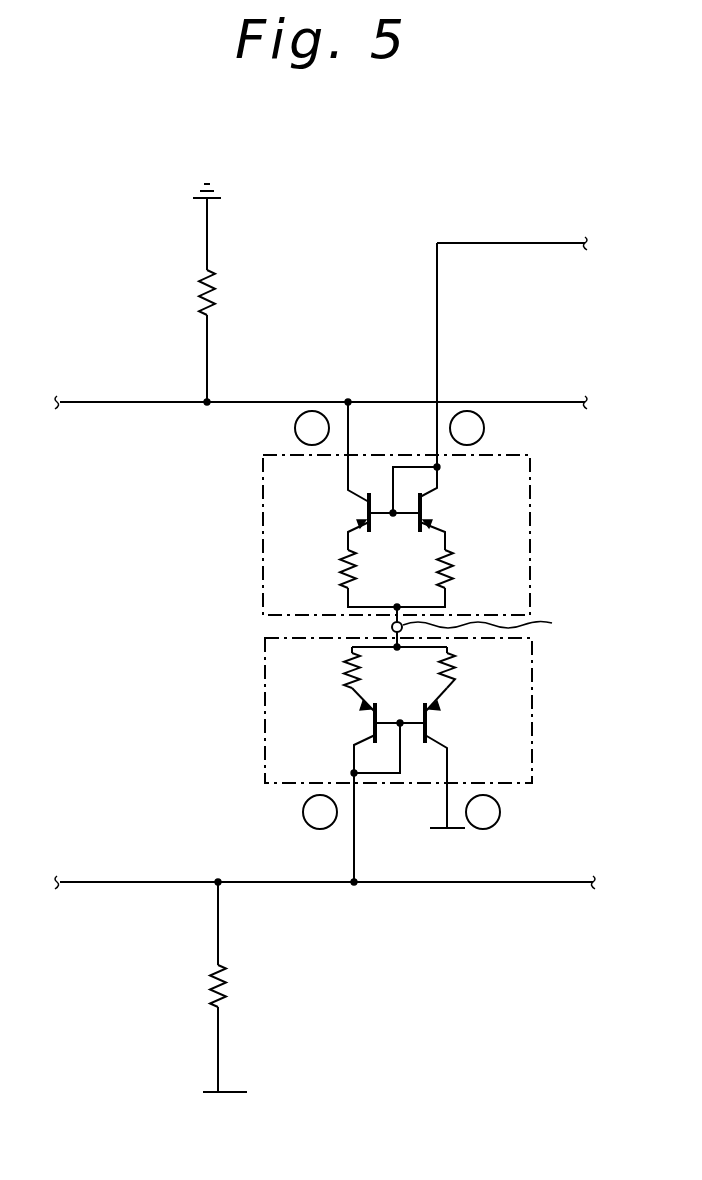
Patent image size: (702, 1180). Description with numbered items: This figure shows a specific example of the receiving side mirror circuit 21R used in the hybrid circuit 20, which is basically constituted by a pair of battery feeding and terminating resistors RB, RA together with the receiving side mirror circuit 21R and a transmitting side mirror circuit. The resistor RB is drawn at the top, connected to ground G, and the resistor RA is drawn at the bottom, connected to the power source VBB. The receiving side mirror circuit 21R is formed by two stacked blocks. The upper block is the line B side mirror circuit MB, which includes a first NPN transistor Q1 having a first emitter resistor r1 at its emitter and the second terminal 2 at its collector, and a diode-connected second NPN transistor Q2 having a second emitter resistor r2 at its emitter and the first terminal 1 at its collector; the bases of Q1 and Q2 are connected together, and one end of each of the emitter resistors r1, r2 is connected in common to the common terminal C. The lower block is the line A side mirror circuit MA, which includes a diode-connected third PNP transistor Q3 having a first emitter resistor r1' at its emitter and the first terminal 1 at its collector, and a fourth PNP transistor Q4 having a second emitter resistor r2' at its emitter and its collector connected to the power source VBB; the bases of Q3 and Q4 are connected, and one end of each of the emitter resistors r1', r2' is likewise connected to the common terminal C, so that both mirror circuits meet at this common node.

The hybrid circuit 20 is at (339, 305).
The receiving side mirror circuit 21R is at (247, 627).
The first terminal 1 is at (393, 620).
The second terminal 2 is at (397, 620).
The line B side mirror circuit MB is at (262, 484).
The line A side mirror circuit MA is at (262, 742).
The first NPN transistor Q1 is at (363, 513).
The second NPN transistor Q2 is at (436, 505).
The third PNP transistor Q3 is at (368, 727).
The fourth PNP transistor Q4 is at (437, 726).
The first emitter resistor r1 is at (347, 578).
The second emitter resistor r2 is at (446, 578).
The first emitter resistor r1' is at (329, 667).
The second emitter resistor r2' is at (472, 667).
The battery feeding and terminating resistor RB is at (198, 292).
The battery feeding and terminating resistor RA is at (214, 985).
The common terminal C is at (482, 625).
The ground G is at (217, 200).
The power source VBB is at (350, 972).